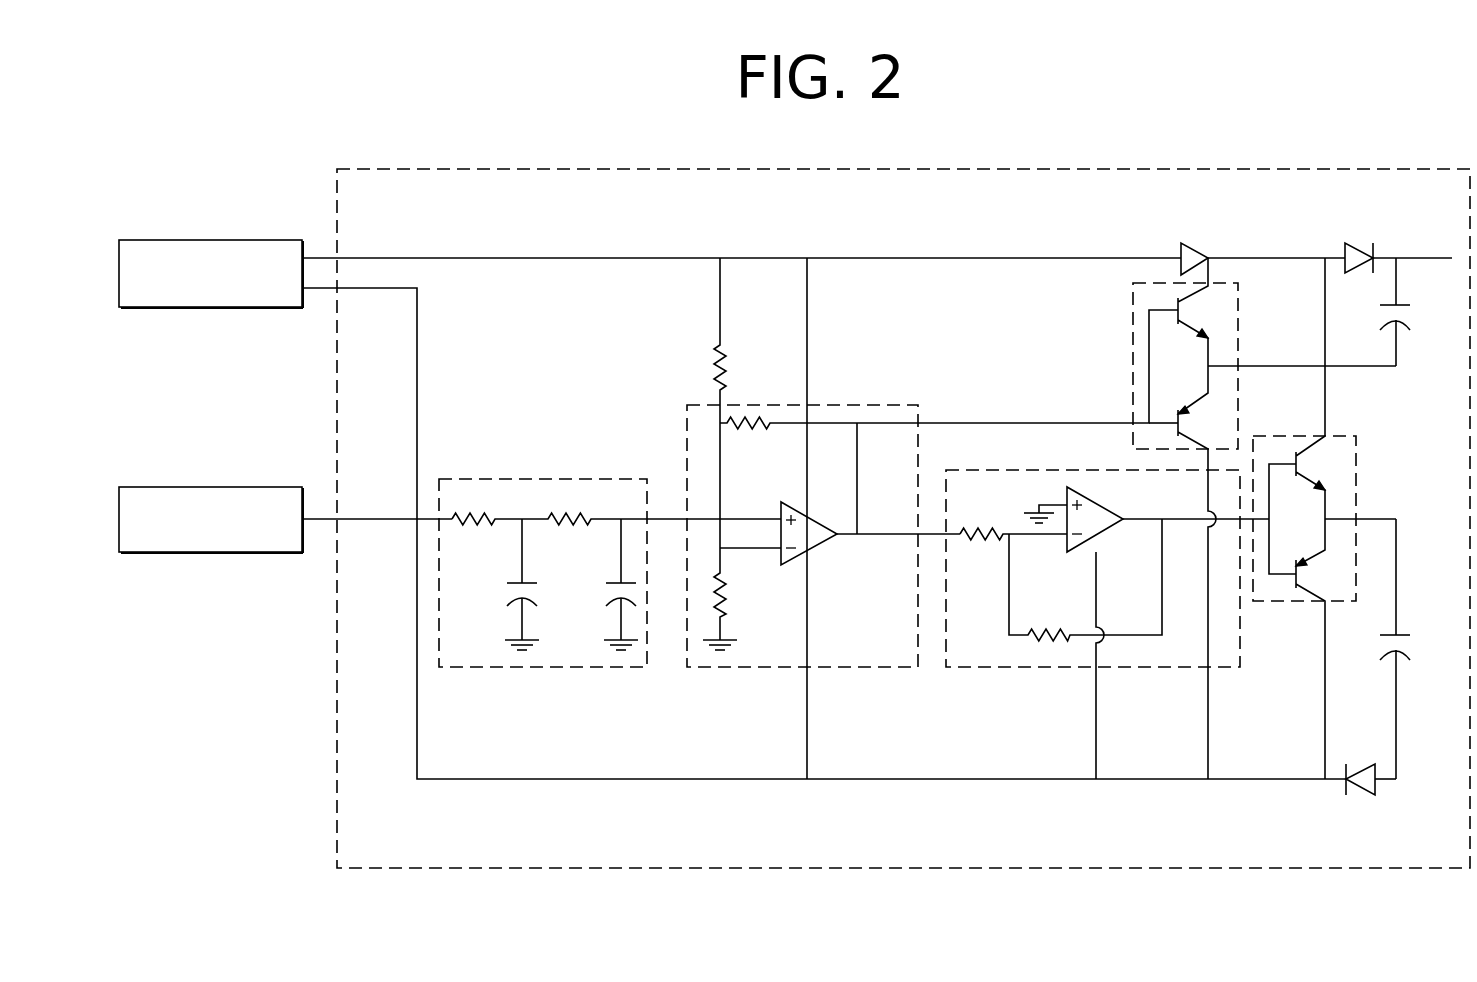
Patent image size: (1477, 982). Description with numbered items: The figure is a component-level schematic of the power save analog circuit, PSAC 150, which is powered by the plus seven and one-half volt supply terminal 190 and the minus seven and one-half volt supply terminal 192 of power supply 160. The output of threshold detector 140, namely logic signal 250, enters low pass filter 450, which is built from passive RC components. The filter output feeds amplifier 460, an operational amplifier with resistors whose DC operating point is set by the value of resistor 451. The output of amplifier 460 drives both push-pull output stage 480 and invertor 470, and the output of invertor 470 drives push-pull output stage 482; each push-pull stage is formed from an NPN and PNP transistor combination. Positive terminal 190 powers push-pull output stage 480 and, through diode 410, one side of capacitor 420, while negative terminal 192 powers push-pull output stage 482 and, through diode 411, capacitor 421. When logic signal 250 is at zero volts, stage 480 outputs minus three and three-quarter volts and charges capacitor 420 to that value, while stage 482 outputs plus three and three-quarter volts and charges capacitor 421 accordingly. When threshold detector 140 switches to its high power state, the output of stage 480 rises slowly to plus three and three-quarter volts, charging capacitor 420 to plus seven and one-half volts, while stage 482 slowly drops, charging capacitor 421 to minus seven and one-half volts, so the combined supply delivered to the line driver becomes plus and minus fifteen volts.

The threshold detector 140 is at (135, 487).
The power save analog circuit (PSAC) 150 is at (1132, 164).
The power supply 160 is at (163, 240).
The +7.5 volt supply terminal 190 is at (325, 257).
The -7.5 volt supply terminal 192 is at (325, 290).
The logic signal 250 is at (400, 521).
The diode 410 is at (1352, 240).
The diode 411 is at (1355, 793).
The capacitor 420 is at (1402, 322).
The capacitor 421 is at (1400, 652).
The low pass filter 450 is at (530, 479).
The resistor 451 is at (718, 352).
The amplifier 460 is at (860, 405).
The invertor 470 is at (1025, 668).
The push-pull output stage 480 is at (1133, 312).
The push-pull output stage 482 is at (1356, 462).